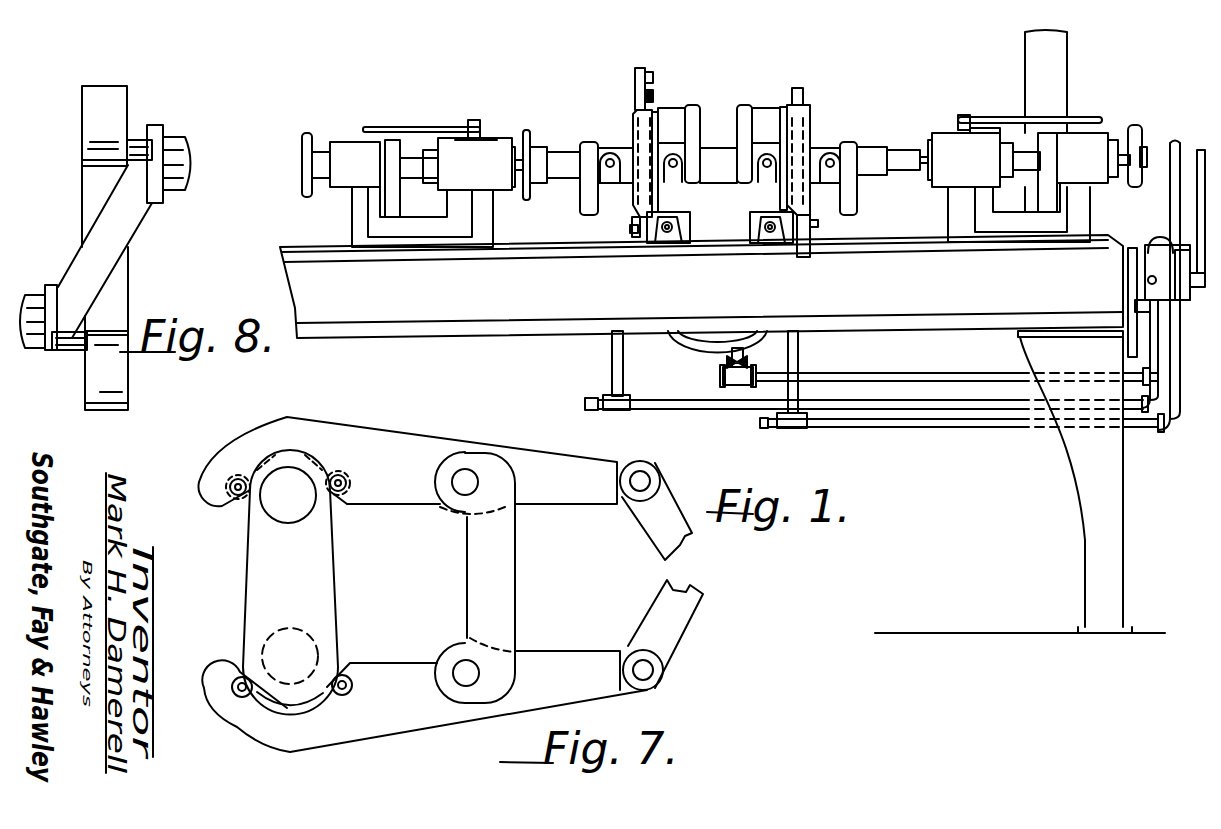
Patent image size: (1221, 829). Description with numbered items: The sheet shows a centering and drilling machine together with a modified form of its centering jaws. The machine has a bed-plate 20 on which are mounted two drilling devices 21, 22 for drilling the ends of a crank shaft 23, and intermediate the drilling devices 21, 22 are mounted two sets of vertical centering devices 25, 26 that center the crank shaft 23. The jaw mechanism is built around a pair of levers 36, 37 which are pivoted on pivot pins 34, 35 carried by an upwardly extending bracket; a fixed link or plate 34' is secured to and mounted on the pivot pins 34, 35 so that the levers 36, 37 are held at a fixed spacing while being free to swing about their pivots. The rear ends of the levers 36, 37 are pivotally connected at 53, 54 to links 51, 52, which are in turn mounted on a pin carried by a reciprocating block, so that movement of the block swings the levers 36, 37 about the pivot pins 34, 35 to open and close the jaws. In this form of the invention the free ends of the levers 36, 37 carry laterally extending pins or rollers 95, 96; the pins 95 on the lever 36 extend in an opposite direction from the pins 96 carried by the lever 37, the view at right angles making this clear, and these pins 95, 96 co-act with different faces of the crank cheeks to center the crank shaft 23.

In FIG. 1, the bed-plate 20 is at (1040, 288).
In FIG. 1, the drilling device 21 is at (480, 152).
In FIG. 1, the drilling device 22 is at (942, 147).
In FIG. 1, the crank shaft 23 is at (527, 157).
In FIG. 1, the vertical centering device 25 is at (667, 237).
In FIG. 1, the vertical centering device 26 is at (770, 237).
In FIG. 7, the pivot pin 34 is at (474, 461).
In FIG. 7, the fixed link or plate 34' is at (514, 578).
In FIG. 7, the pivot pin 35 is at (463, 671).
In FIG. 1, the lever 36 is at (638, 68).
In FIG. 7, the lever 36 is at (415, 440).
In FIG. 8, the lever 36 is at (103, 90).
In FIG. 1, the lever 37 is at (642, 230).
In FIG. 8, the lever 37 is at (102, 410).
In FIG. 7, the link 51 is at (663, 507).
In FIG. 7, the link 52 is at (683, 622).
In FIG. 7, the pivotal connection 53 is at (641, 480).
In FIG. 7, the pivotal connection 54 is at (663, 673).
In FIG. 7, the pin or roller 95 is at (233, 478).
In FIG. 8, the pin or roller 95 is at (135, 140).
In FIG. 7, the pin or roller 96 is at (225, 676).
In FIG. 8, the pin or roller 96 is at (67, 352).